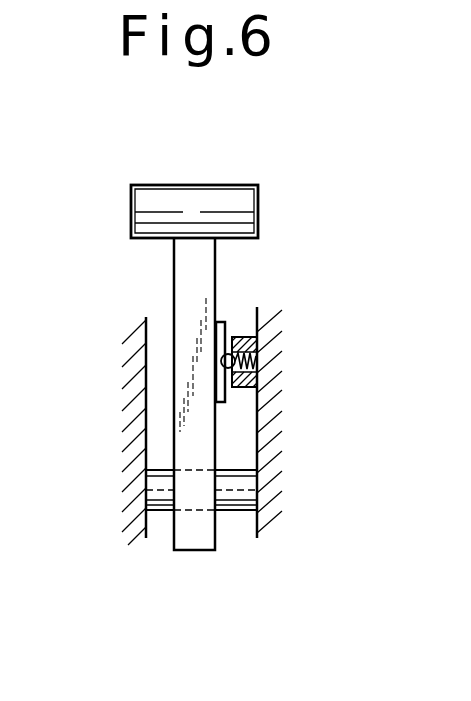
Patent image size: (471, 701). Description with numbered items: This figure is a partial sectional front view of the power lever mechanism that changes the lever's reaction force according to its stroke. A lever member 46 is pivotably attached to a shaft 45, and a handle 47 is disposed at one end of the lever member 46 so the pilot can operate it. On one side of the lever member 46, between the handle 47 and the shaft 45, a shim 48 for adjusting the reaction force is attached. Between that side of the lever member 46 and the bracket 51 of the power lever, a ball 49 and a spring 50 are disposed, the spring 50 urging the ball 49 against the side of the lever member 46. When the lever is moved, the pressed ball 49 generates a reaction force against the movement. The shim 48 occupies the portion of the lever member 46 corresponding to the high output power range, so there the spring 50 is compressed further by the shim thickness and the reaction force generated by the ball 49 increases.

The shaft 45 is at (232, 511).
The lever member 46 is at (181, 285).
The handle 47 is at (248, 200).
The shim 48 is at (220, 322).
The ball 49 is at (258, 385).
The spring 50 is at (258, 368).
The bracket 51 is at (318, 529).